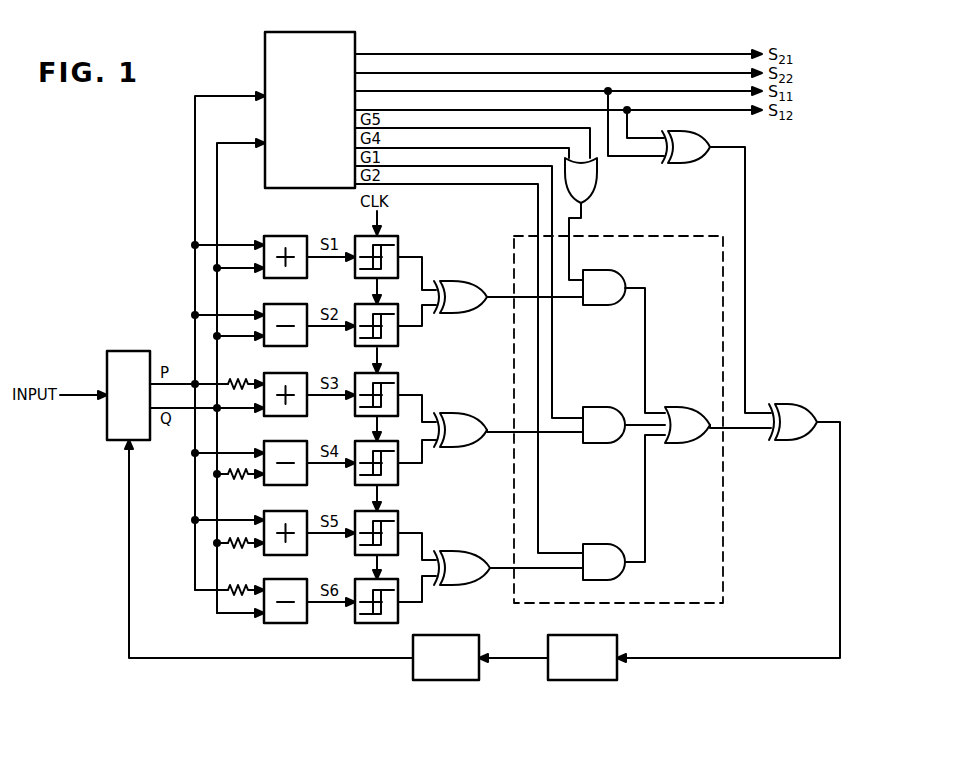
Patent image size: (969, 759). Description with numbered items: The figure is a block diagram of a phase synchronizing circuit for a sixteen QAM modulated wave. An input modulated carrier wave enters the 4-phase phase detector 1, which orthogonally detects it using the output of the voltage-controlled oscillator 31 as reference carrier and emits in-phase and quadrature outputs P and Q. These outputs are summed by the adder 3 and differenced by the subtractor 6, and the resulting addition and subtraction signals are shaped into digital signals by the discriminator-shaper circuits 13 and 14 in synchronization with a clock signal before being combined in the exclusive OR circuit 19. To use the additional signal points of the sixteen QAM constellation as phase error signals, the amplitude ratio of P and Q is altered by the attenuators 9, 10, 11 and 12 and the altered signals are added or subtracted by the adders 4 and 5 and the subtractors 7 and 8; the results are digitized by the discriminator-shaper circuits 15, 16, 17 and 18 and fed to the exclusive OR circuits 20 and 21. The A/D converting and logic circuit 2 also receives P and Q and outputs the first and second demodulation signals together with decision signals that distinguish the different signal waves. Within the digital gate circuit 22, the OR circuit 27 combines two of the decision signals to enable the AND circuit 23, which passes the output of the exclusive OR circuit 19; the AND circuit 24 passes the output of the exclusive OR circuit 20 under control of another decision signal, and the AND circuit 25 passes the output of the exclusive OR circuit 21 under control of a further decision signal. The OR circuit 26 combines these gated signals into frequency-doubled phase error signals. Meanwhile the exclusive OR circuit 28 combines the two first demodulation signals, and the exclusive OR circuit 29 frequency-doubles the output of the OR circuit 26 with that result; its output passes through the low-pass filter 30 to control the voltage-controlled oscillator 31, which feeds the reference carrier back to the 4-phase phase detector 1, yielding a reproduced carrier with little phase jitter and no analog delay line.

The 4-phase phase detector 1 is at (128, 350).
The A/D converting and logic circuit 2 is at (355, 33).
The adder 3 is at (285, 236).
The adder 4 is at (285, 373).
The adder 5 is at (285, 511).
The subtractor 6 is at (285, 304).
The subtractor 7 is at (285, 441).
The subtractor 8 is at (287, 579).
The attenuator 9 is at (238, 379).
The attenuator 10 is at (238, 480).
The attenuator 11 is at (238, 549).
The attenuator 12 is at (238, 596).
The discriminator-shaper circuit 13 is at (398, 238).
The discriminator-shaper circuit 14 is at (398, 308).
The discriminator-shaper circuit 15 is at (398, 375).
The discriminator-shaper circuit 16 is at (398, 444).
The discriminator-shaper circuit 17 is at (398, 514).
The discriminator-shaper circuit 18 is at (398, 583).
The exclusive OR circuit 19 is at (478, 281).
The exclusive OR circuit 20 is at (483, 413).
The exclusive OR circuit 21 is at (484, 551).
The digital gate circuit 22 is at (727, 606).
The AND circuit 23 is at (626, 276).
The AND circuit 24 is at (612, 407).
The AND circuit 25 is at (603, 544).
The OR circuit 26 is at (690, 407).
The OR circuit 27 is at (597, 192).
The exclusive OR circuit 28 is at (685, 163).
The exclusive OR circuit 29 is at (802, 404).
The low-pass filter 30 is at (576, 635).
The voltage-controlled oscillator 31 is at (449, 635).